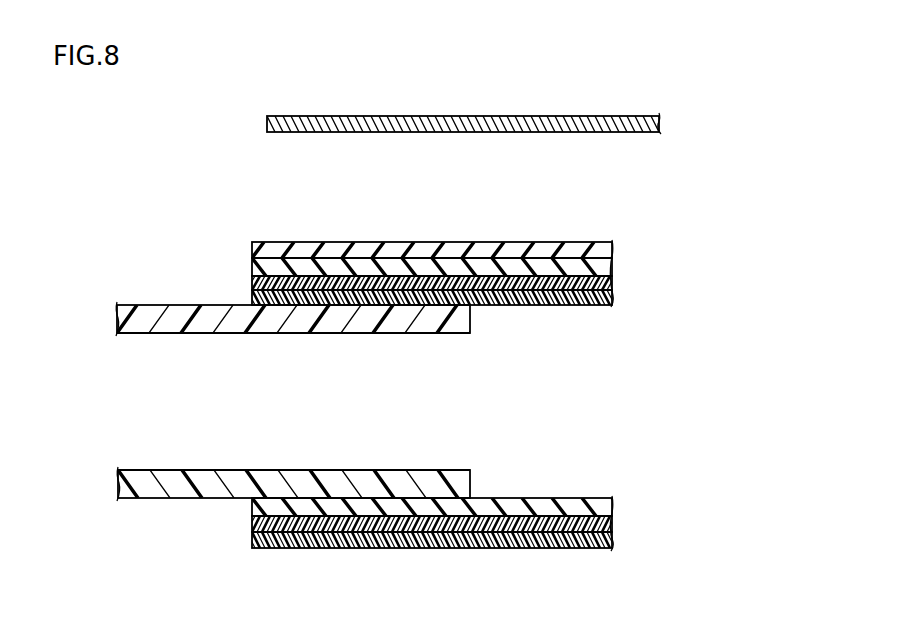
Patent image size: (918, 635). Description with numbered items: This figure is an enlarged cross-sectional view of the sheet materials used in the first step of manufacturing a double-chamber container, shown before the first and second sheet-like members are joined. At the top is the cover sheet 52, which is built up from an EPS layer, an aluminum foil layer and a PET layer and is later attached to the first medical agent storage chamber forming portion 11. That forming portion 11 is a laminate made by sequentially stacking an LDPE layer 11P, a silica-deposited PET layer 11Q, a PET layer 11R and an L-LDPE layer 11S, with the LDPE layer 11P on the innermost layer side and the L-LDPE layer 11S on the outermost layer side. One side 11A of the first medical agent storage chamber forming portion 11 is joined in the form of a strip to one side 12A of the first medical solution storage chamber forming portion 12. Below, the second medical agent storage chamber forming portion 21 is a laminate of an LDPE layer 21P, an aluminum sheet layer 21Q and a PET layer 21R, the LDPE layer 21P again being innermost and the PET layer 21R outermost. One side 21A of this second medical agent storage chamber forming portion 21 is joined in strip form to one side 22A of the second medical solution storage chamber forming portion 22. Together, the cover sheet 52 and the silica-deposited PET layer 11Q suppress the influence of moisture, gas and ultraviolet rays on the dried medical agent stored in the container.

The cover sheet 52 is at (491, 116).
The first medical agent storage chamber forming portion 11 is at (482, 275).
The L-LDPE layer 11S is at (599, 253).
The PET layer 11R is at (601, 270).
The silica-deposited PET layer 11Q is at (603, 283).
The LDPE layer 11P is at (463, 302).
The one side of first medical agent storage chamber forming portion 11A is at (352, 276).
The first medical solution storage chamber forming portion 12 is at (122, 320).
The one side of first medical solution storage chamber forming portion 12A is at (378, 334).
The second medical solution storage chamber forming portion 22 is at (122, 485).
The one side of second medical solution storage chamber forming portion 22A is at (378, 470).
The second medical agent storage chamber forming portion 21 is at (482, 521).
The LDPE layer 21P is at (603, 510).
The aluminum sheet layer 21Q is at (606, 524).
The PET layer 21R is at (606, 540).
The one side of second medical agent storage chamber forming portion 21A is at (350, 532).